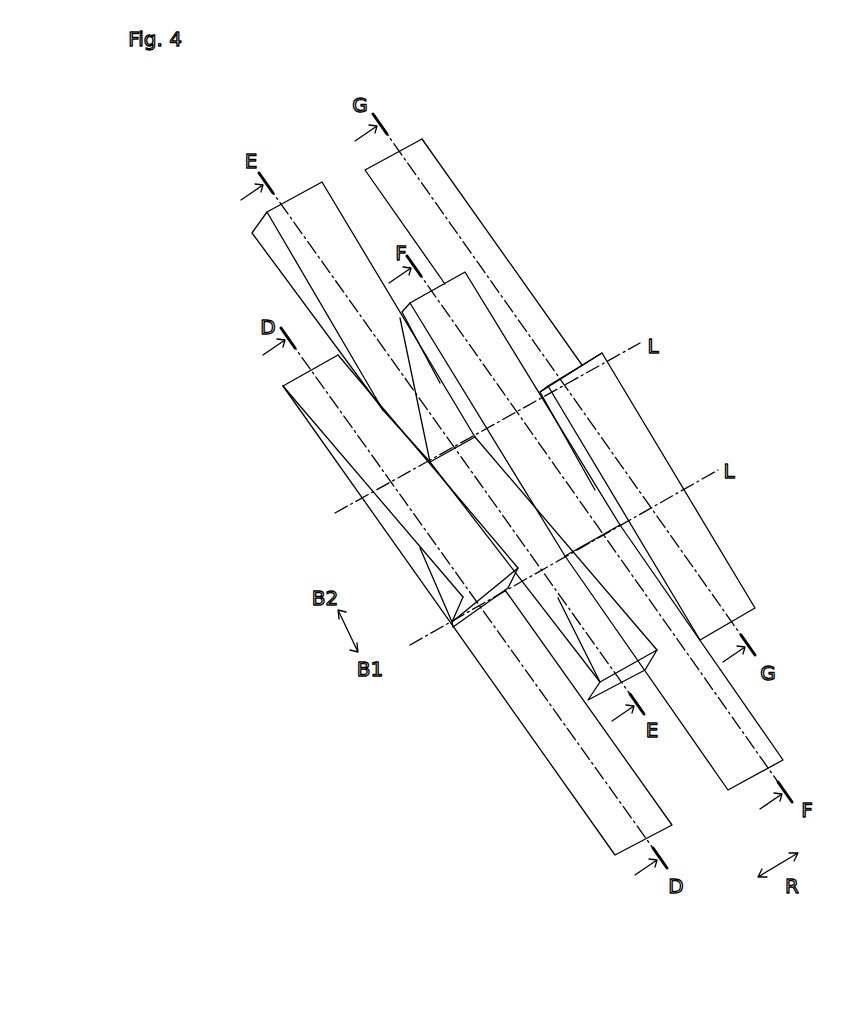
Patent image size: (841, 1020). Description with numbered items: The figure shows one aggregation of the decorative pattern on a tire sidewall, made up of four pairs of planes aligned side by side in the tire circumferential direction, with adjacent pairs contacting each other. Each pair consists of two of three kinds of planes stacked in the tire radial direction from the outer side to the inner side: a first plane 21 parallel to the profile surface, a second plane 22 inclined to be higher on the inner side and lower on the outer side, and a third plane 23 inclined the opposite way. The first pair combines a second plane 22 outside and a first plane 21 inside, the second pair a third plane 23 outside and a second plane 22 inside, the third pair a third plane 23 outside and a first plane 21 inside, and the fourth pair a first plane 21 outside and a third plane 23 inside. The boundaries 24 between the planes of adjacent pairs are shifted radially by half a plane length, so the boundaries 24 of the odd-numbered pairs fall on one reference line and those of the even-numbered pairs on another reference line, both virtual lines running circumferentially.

The first plane 21 is at (520, 297).
The second plane 22 is at (465, 537).
The third plane 23 is at (332, 252).
The boundary 24 is at (585, 357).